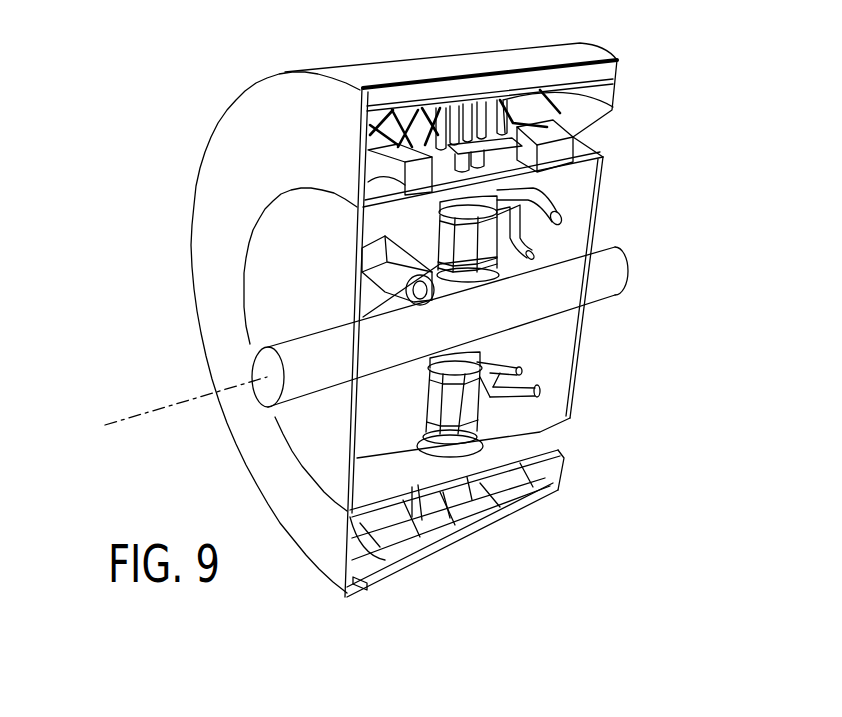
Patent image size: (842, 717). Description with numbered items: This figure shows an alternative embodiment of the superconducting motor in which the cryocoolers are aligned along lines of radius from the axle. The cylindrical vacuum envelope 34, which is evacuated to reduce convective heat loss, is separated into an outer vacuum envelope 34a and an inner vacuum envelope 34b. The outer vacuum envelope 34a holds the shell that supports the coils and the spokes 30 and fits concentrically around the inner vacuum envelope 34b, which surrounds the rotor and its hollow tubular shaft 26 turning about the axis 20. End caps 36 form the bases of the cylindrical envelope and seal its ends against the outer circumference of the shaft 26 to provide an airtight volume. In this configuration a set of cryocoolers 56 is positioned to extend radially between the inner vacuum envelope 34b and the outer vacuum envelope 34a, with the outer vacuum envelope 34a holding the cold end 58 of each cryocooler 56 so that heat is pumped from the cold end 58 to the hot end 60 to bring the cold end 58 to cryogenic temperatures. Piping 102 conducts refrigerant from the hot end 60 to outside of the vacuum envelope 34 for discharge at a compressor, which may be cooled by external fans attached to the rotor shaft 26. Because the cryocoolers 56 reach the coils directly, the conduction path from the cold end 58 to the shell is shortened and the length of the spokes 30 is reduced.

The axis 20 is at (147, 412).
The shaft 26 is at (295, 392).
The spokes 30 is at (365, 124).
The vacuum envelope 34 is at (503, 513).
The outer vacuum envelope 34a is at (587, 110).
The inner vacuum envelope 34b is at (560, 350).
The end caps 36 is at (210, 167).
The cryocooler 56 is at (473, 397).
The cold end 58 is at (453, 145).
The hot end 60 is at (673, 227).
The piping 102 is at (545, 198).